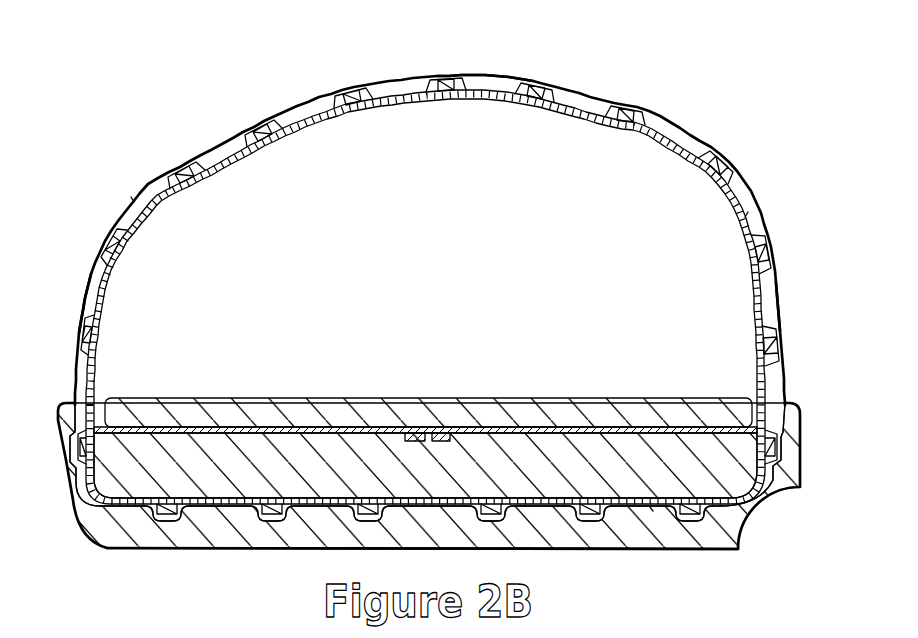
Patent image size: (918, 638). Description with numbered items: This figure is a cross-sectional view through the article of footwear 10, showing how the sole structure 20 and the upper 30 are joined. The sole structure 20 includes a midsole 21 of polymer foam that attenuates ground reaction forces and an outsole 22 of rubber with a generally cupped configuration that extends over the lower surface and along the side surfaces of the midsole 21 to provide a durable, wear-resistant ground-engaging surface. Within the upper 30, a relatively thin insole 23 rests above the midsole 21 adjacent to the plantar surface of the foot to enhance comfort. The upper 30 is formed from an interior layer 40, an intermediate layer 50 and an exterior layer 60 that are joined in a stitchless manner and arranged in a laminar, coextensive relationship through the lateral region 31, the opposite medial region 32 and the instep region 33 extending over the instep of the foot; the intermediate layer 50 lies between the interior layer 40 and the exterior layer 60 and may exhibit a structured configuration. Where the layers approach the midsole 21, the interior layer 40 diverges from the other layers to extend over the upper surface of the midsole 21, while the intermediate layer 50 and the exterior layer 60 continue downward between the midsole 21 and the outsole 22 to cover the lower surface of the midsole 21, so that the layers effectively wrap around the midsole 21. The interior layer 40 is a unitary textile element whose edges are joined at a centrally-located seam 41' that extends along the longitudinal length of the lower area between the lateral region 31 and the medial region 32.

The article of footwear 10 is at (200, 106).
The sole structure 20 is at (97, 547).
The midsole 21 is at (205, 447).
The outsole 22 is at (238, 547).
The insole 23 is at (280, 412).
The upper 30 is at (152, 182).
The lateral region 31 is at (784, 300).
The medial region 32 is at (83, 281).
The instep region 33 is at (488, 77).
The interior layer 40 is at (107, 301).
The seam 41' is at (465, 455).
The intermediate layer 50 is at (197, 185).
The exterior layer 60 is at (138, 203).